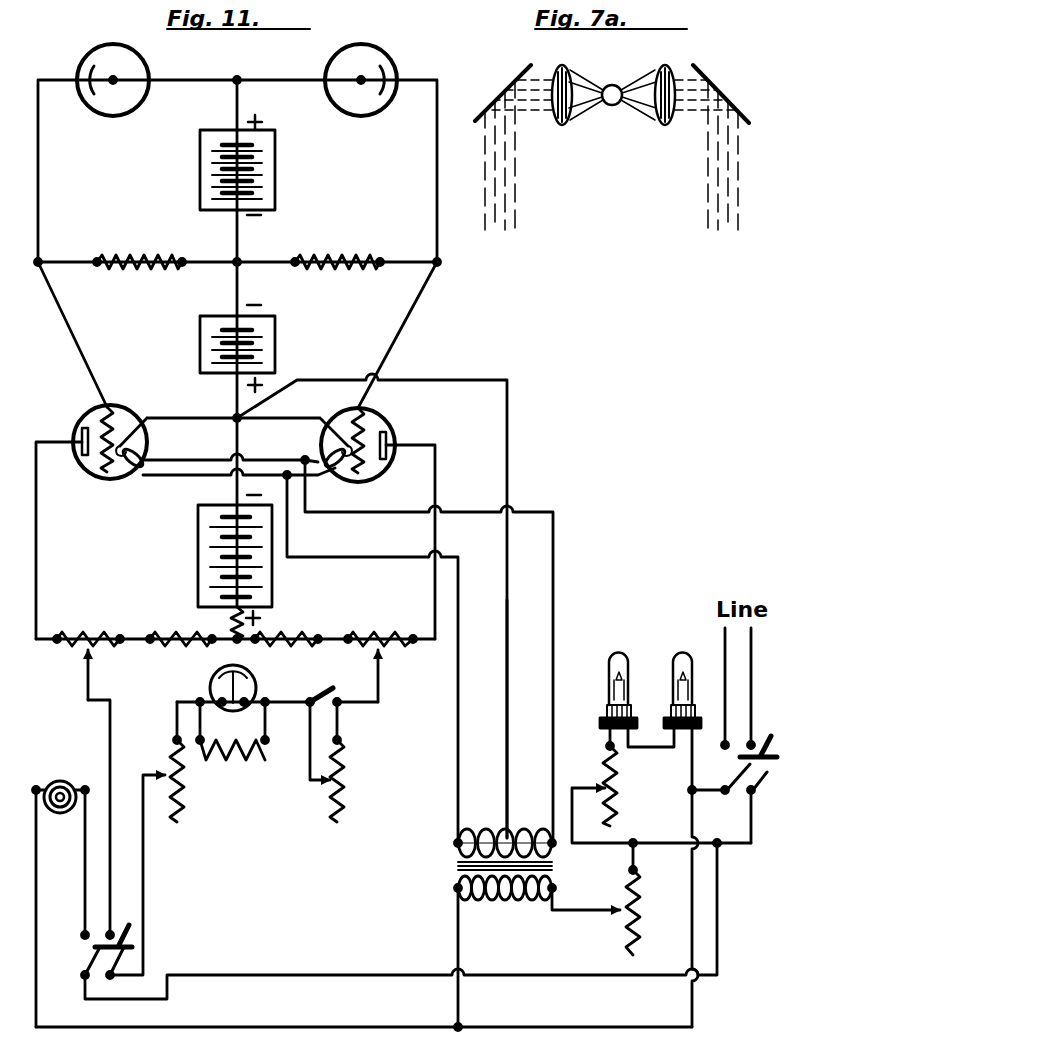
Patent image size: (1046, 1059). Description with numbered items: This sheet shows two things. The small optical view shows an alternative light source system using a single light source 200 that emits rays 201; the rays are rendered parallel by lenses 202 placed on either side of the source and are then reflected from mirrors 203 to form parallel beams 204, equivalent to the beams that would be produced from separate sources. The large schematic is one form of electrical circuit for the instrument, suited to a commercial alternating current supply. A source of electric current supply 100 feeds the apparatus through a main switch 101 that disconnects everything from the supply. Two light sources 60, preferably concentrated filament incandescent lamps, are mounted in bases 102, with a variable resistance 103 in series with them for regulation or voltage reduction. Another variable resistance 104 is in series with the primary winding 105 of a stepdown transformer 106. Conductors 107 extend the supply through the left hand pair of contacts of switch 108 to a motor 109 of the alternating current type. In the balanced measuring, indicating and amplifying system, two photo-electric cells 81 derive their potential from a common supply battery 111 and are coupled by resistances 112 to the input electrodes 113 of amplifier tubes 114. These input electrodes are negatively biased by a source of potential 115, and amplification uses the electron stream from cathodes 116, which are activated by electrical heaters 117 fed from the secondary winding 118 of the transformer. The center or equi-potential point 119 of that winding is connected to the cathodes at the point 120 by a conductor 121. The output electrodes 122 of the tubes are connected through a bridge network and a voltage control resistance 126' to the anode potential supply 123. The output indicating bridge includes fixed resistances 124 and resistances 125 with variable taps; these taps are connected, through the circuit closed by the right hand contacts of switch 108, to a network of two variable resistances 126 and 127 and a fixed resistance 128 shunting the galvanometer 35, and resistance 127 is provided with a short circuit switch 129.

In FIG. 11, the photo-electric cells 81 is at (88, 43).
In FIG. 11, the common supply battery 111 is at (270, 170).
In FIG. 11, the resistances 112 is at (135, 253).
In FIG. 11, the input electrodes 113 is at (97, 400).
In FIG. 11, the amplifier tubes 114 is at (86, 474).
In FIG. 11, the source of potential 115 is at (268, 340).
In FIG. 11, the cathodes 116 is at (152, 415).
In FIG. 11, the electrical heaters 117 is at (147, 476).
In FIG. 11, the point 120 is at (236, 419).
In FIG. 11, the conductor 121 is at (509, 431).
In FIG. 11, the output electrodes 122 is at (77, 433).
In FIG. 11, the anode potential supply 123 is at (198, 552).
In FIG. 11, the fixed resistances 124 is at (172, 648).
In FIG. 11, the resistances with variable taps 125 is at (80, 630).
In FIG. 11, the voltage control resistance 126' is at (191, 615).
In FIG. 11, the variable resistance 126 is at (174, 838).
In FIG. 11, the galvanometer 35 is at (257, 686).
In FIG. 11, the short circuit switch 129 is at (321, 686).
In FIG. 11, the variable resistance 127 is at (347, 774).
In FIG. 11, the fixed resistance 128 is at (215, 760).
In FIG. 11, the motor 109 is at (73, 780).
In FIG. 11, the switch 108 is at (95, 952).
In FIG. 11, the conductors 107 is at (263, 977).
In FIG. 11, the secondary winding 118 is at (456, 838).
In FIG. 11, the center point of secondary winding 119 is at (507, 833).
In FIG. 11, the stepdown transformer 106 is at (457, 866).
In FIG. 11, the primary winding 105 is at (458, 897).
In FIG. 11, the variable resistance 104 is at (626, 936).
In FIG. 11, the variable resistance 103 is at (612, 800).
In FIG. 11, the light sources 60 is at (677, 660).
In FIG. 11, the bases 102 is at (670, 718).
In FIG. 11, the source of electric current supply 100 is at (750, 642).
In FIG. 11, the main switch 101 is at (763, 820).
In FIG. 7A, the single light source 200 is at (612, 84).
In FIG. 7A, the rays 201 is at (578, 116).
In FIG. 7A, the lenses 202 is at (562, 126).
In FIG. 7A, the mirrors 203 is at (505, 92).
In FIG. 7A, the parallel beams 204 is at (525, 208).